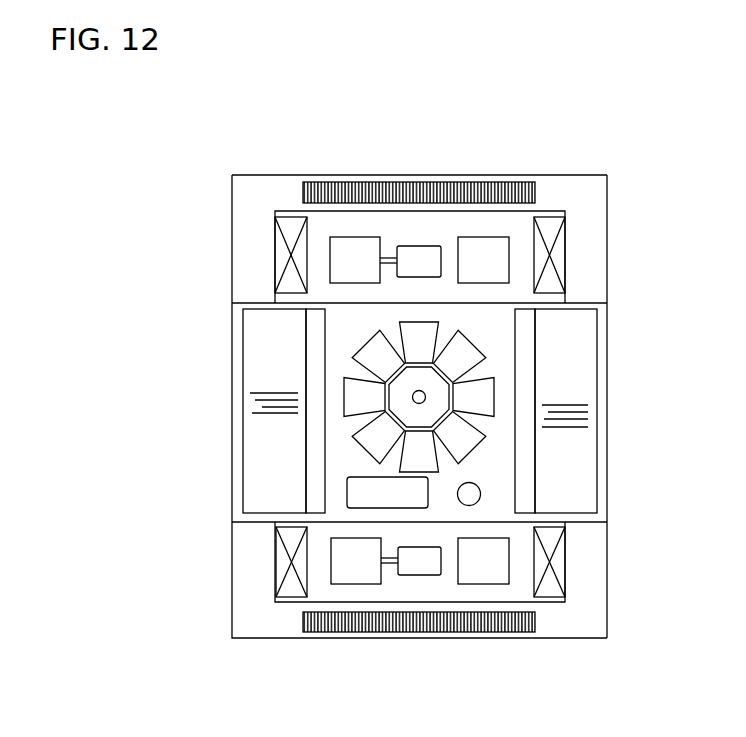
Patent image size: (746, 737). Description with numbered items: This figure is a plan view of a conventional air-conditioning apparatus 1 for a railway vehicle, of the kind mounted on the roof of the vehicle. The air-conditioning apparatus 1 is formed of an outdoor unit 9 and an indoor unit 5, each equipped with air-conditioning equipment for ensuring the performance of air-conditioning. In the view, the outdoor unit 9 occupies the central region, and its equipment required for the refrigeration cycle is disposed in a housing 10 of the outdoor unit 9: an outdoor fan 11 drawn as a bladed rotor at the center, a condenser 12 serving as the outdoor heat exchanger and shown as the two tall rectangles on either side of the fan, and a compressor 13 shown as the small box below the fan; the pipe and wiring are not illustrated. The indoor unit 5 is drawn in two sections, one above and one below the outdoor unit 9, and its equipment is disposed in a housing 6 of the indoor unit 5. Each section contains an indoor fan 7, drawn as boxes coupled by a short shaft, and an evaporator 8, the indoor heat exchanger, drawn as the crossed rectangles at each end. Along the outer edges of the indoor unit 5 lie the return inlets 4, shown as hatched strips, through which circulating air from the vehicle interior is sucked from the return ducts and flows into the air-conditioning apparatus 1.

The air-conditioning apparatus 1 is at (628, 278).
The return inlet 4 is at (430, 192).
The indoor unit 5 is at (580, 237).
The housing 6 is at (607, 185).
The indoor fan 7 is at (497, 237).
The evaporator 8 is at (275, 255).
The outdoor unit 9 is at (603, 467).
The housing 10 is at (607, 503).
The outdoor fan 11 is at (497, 395).
The condenser 12 is at (243, 349).
The compressor 13 is at (357, 493).